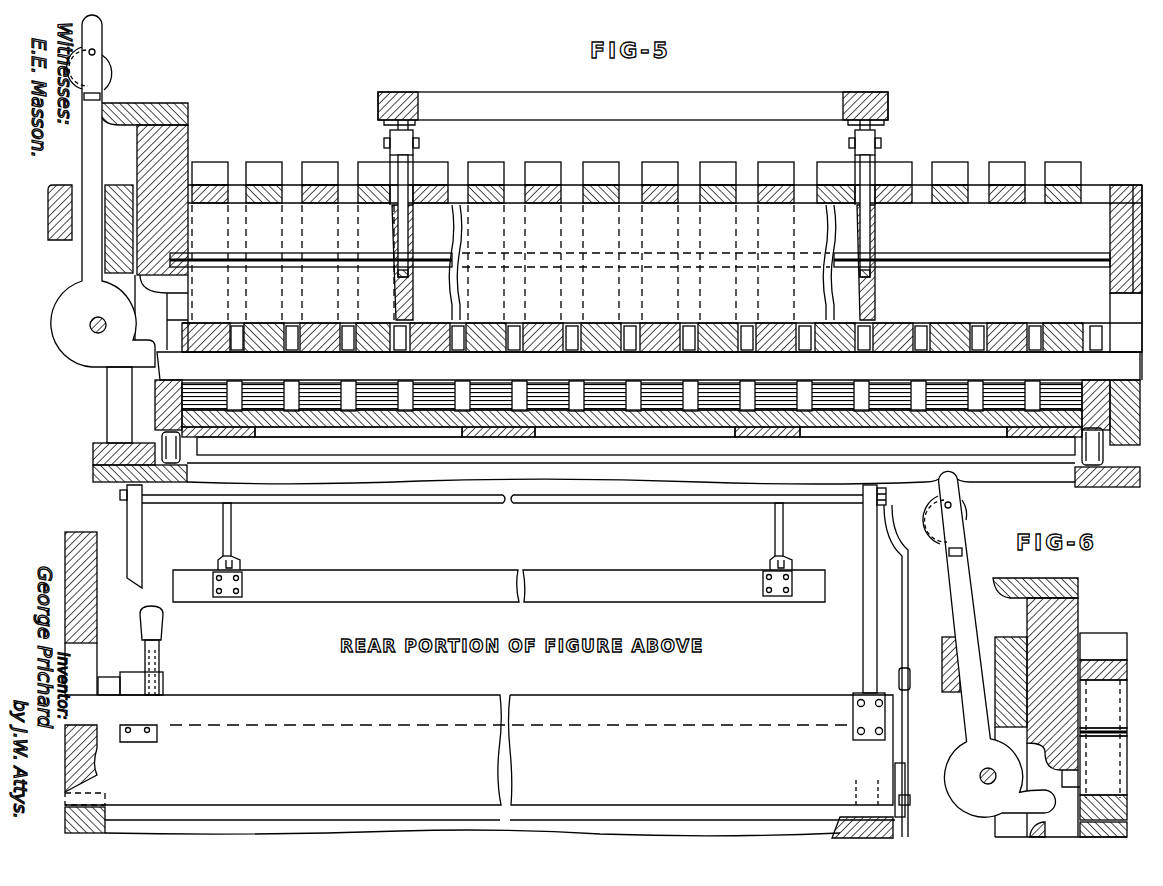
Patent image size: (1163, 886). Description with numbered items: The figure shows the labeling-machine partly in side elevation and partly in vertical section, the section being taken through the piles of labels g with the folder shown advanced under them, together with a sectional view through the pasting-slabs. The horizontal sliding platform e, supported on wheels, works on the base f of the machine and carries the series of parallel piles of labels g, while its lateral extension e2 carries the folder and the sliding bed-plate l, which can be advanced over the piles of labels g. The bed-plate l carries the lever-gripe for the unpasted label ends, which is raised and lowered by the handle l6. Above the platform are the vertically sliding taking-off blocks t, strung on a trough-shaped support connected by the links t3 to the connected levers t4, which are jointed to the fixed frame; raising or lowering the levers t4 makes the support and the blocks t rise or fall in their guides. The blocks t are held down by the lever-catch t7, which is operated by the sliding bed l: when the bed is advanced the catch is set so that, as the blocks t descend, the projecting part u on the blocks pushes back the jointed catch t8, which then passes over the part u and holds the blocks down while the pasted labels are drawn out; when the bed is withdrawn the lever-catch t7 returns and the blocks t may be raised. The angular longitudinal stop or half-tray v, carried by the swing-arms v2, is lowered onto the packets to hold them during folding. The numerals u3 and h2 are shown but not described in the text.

In FIG. 5, the taking-off blocks t is at (632, 337).
In FIG. 6, the taking-off blocks t is at (1103, 740).
In FIG. 5, the links t3 is at (414, 165).
In FIG. 5, the connected levers t4 is at (633, 94).
In FIG. 5, the handle l6 is at (313, 268).
In FIG. 6, the handle l6 is at (1102, 732).
In FIG. 5, the lever-catch t7 is at (93, 341).
In FIG. 6, the lever-catch t7 is at (991, 791).
In FIG. 5, the jointed catch t8 is at (103, 88).
In FIG. 6, the jointed catch t8 is at (964, 548).
In FIG. 5, the projecting part u is at (144, 103).
In FIG. 6, the projecting part u is at (1035, 575).
In FIG. 5, the rod joint u3 is at (497, 500).
In FIG. 5, the bed-plate l is at (648, 366).
In FIG. 5, the guide slot h2 is at (294, 350).
In FIG. 5, the piles of labels g is at (312, 413).
In FIG. 5, the horizontal sliding platform e is at (237, 440).
In FIG. 6, the horizontal sliding platform e is at (1089, 825).
In FIG. 5, the lateral extension e2 is at (479, 740).
In FIG. 5, the base f is at (166, 465).
In FIG. 5, the angular longitudinal stop or half-tray v is at (499, 586).
In FIG. 5, the swing-arms v2 is at (232, 535).